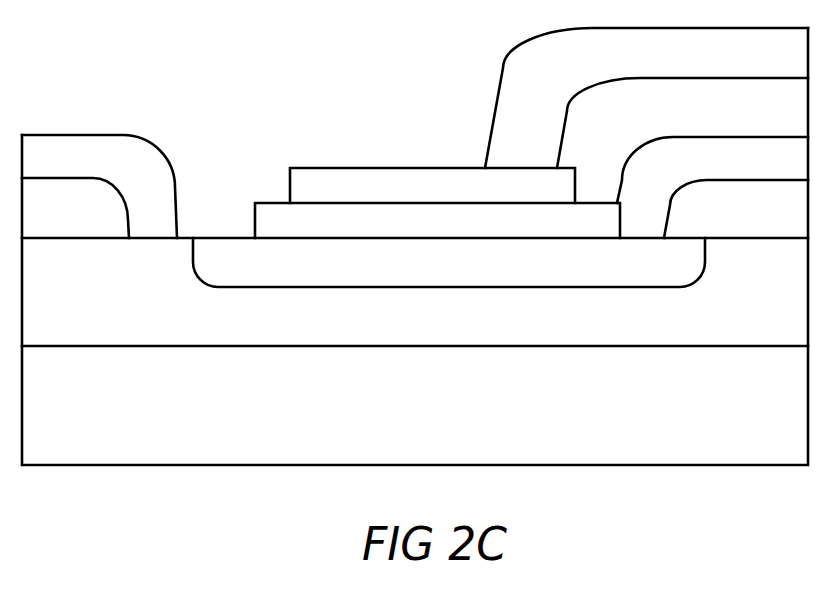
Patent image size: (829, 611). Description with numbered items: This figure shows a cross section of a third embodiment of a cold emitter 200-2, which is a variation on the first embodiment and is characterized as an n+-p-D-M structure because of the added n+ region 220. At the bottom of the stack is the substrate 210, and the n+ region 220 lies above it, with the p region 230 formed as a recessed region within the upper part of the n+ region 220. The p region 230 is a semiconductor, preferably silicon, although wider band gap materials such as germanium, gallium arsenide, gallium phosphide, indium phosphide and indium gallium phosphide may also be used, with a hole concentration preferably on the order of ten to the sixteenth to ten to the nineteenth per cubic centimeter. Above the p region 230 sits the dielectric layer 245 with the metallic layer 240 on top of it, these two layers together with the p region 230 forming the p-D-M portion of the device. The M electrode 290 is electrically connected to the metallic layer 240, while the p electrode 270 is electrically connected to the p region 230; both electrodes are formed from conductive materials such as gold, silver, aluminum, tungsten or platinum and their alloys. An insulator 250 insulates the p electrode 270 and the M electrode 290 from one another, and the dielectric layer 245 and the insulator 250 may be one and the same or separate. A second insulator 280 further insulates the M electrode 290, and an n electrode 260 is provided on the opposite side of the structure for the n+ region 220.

The cold emitter 200-2 is at (386, 42).
The substrate 210 is at (798, 448).
The n+ region 220 is at (798, 338).
The p region 230 is at (680, 273).
The metallic layer 240 is at (308, 185).
The dielectric layer 245 is at (268, 215).
The insulator 250 is at (77, 231).
The n electrode 260 is at (77, 168).
The p electrode 270 is at (798, 168).
The second insulator 280 is at (798, 118).
The M electrode 290 is at (798, 66).